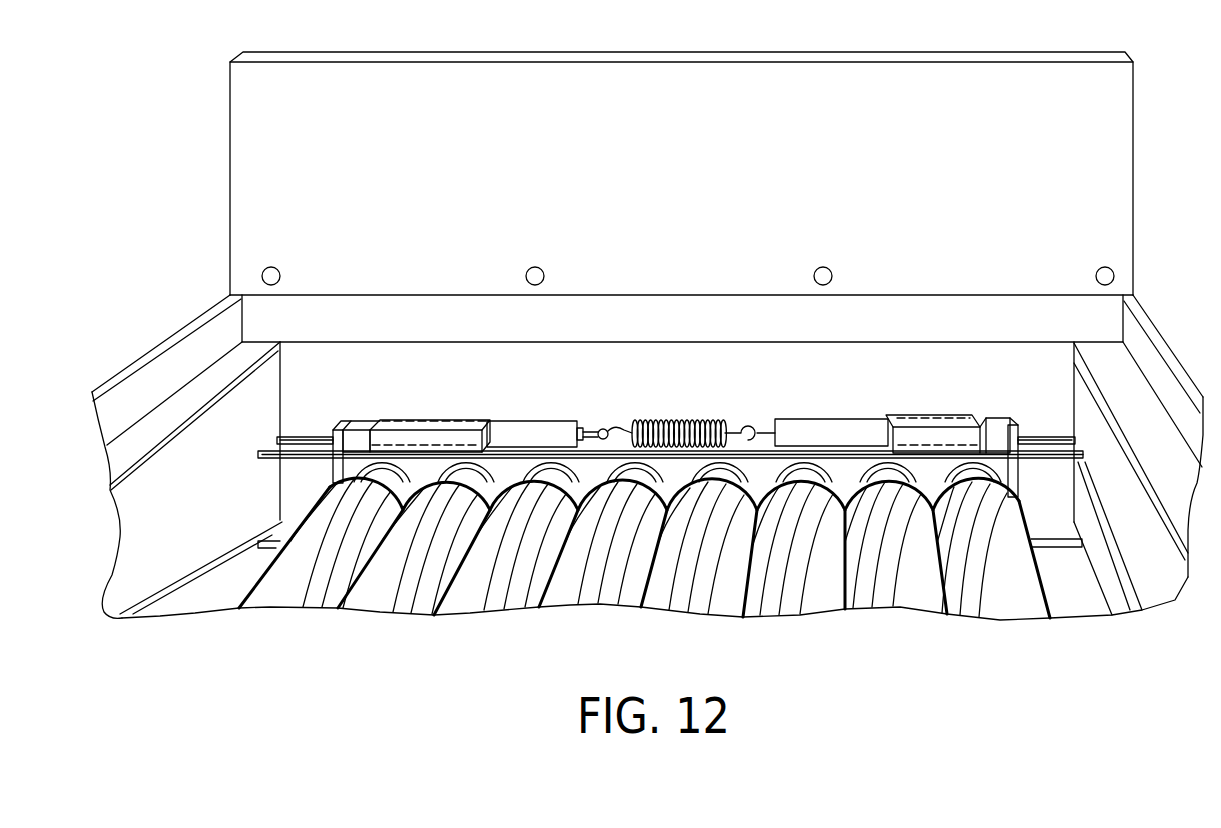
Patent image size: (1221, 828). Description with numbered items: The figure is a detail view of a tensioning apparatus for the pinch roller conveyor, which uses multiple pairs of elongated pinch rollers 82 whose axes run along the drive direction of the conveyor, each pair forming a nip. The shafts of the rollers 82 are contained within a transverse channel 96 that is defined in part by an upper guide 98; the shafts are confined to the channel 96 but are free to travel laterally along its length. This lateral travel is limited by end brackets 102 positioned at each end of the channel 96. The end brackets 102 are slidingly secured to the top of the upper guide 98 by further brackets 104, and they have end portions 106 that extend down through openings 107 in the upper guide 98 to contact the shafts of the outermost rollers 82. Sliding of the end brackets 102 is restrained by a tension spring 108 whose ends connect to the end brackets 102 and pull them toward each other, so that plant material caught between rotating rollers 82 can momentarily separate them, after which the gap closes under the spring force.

The pinch rollers 82 is at (285, 584).
The transverse channel 96 is at (842, 483).
The upper guide 98 is at (590, 450).
The end brackets 102 is at (362, 425).
The brackets 104 is at (461, 425).
The end portions 106 is at (343, 464).
The openings 107 is at (312, 436).
The tension spring 108 is at (677, 420).